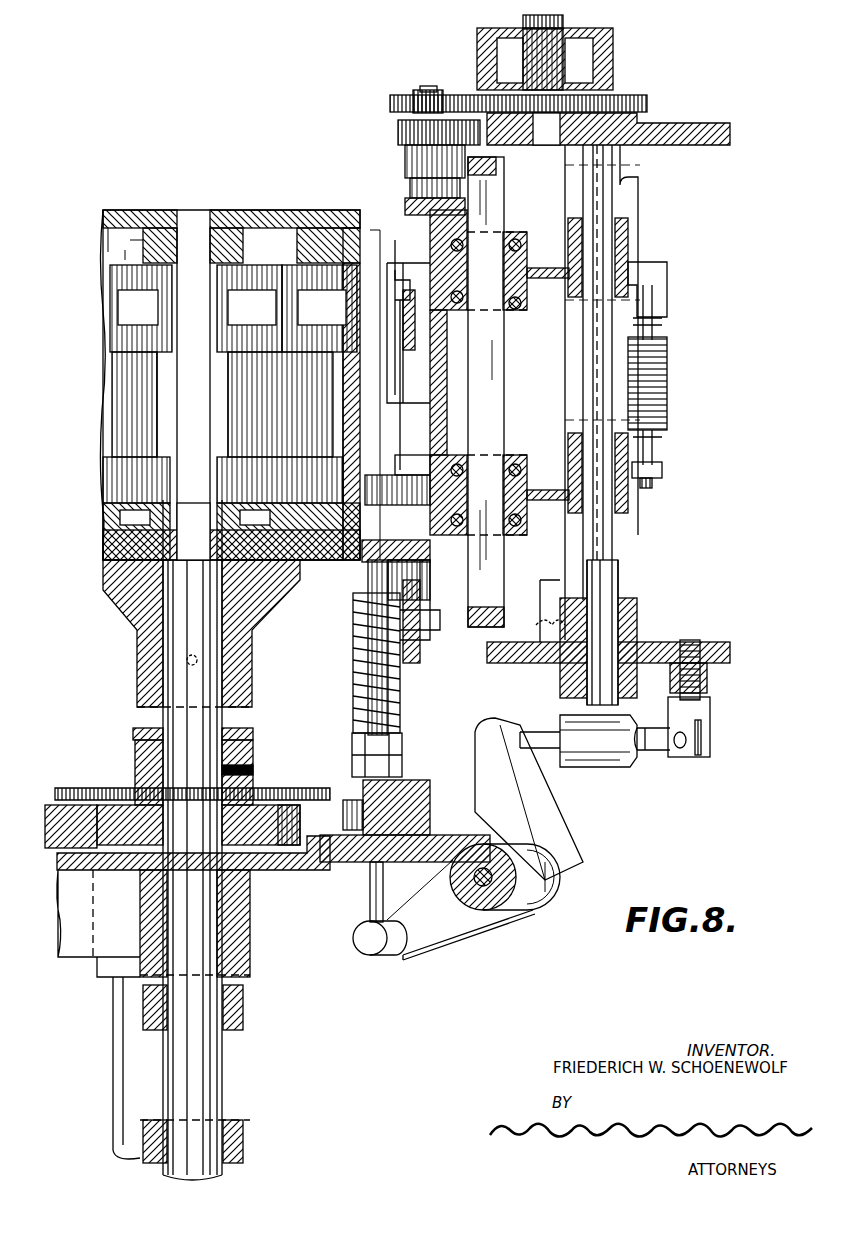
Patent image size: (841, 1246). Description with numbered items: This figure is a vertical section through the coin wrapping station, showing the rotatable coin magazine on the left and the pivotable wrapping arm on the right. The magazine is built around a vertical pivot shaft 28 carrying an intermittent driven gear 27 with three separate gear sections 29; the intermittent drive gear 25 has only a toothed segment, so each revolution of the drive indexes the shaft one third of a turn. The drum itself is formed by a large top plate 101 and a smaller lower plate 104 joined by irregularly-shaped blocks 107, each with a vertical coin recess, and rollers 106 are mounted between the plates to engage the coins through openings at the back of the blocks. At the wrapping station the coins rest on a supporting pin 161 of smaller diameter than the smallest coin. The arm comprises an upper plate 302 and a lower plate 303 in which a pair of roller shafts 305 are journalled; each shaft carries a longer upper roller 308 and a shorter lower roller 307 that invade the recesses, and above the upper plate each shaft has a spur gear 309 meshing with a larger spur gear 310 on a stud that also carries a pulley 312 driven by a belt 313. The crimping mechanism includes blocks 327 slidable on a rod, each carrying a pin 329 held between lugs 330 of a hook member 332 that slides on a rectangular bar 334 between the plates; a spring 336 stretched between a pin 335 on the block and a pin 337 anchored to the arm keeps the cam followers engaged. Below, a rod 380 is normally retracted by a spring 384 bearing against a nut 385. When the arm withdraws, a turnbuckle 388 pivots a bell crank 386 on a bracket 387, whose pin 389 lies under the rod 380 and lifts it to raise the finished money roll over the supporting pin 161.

The intermittent drive gear 25 is at (50, 805).
The intermittent driven gear 27 is at (116, 805).
The pivot shaft 28 is at (222, 722).
The gear sections 29 is at (288, 805).
The top plate 101 is at (286, 210).
The lower plate 104 is at (297, 565).
The rollers 106 is at (145, 316).
The blocks 107 is at (180, 412).
The supporting pin 161 is at (395, 505).
The upper plate 302 is at (688, 124).
The lower plate 303 is at (522, 663).
The roller shafts 305 is at (408, 202).
The lower roller 307 is at (400, 425).
The upper roller 308 is at (400, 403).
The spur gear 309 is at (402, 92).
The larger spur gear 310 is at (622, 95).
The pulley 312 is at (566, 22).
The belt 313 is at (490, 42).
The blocks 327 is at (512, 310).
The pin 329 is at (545, 278).
The lugs 330 is at (527, 250).
The hook member 332 is at (430, 256).
The rectangular bar 334 is at (505, 212).
The pin 335 is at (662, 470).
The spring 336 is at (667, 402).
The pin 337 is at (648, 287).
The rod 380 is at (370, 905).
The spring 384 is at (353, 660).
The nut 385 is at (352, 746).
The bell crank 386 is at (505, 826).
The bracket 387 is at (285, 870).
The turnbuckle 388 is at (612, 767).
The pin 389 is at (365, 952).